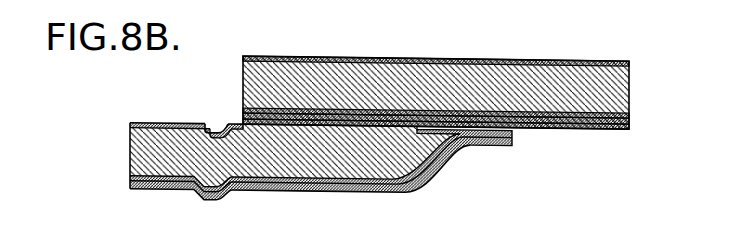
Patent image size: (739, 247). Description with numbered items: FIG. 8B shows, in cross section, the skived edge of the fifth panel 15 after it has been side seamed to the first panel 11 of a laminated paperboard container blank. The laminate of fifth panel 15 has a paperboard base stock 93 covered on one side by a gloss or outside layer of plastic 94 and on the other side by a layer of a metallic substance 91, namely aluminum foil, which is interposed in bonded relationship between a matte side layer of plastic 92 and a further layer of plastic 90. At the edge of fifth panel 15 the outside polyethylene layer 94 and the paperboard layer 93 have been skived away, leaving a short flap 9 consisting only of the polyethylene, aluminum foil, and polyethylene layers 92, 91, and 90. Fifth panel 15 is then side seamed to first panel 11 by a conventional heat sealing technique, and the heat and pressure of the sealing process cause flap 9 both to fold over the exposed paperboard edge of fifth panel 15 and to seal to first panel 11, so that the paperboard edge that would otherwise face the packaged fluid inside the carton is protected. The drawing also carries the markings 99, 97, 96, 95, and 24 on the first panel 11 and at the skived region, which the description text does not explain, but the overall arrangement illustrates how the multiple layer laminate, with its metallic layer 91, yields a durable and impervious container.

The first panel 11 is at (523, 52).
The outer coating layer 99 is at (483, 53).
The adhesive layer 97 is at (629, 108).
The foil layer 96 is at (630, 114).
The heat seal layer 95 is at (585, 122).
The fifth panel 15 is at (127, 149).
The layer of plastic 94 is at (163, 121).
The score line 24 is at (217, 129).
The paperboard base stock 93 is at (140, 158).
The layer of plastic 92 is at (133, 176).
The layer of plastic 90 is at (168, 188).
The layer of a metallic substance 91 is at (345, 188).
The flap 9 is at (493, 141).